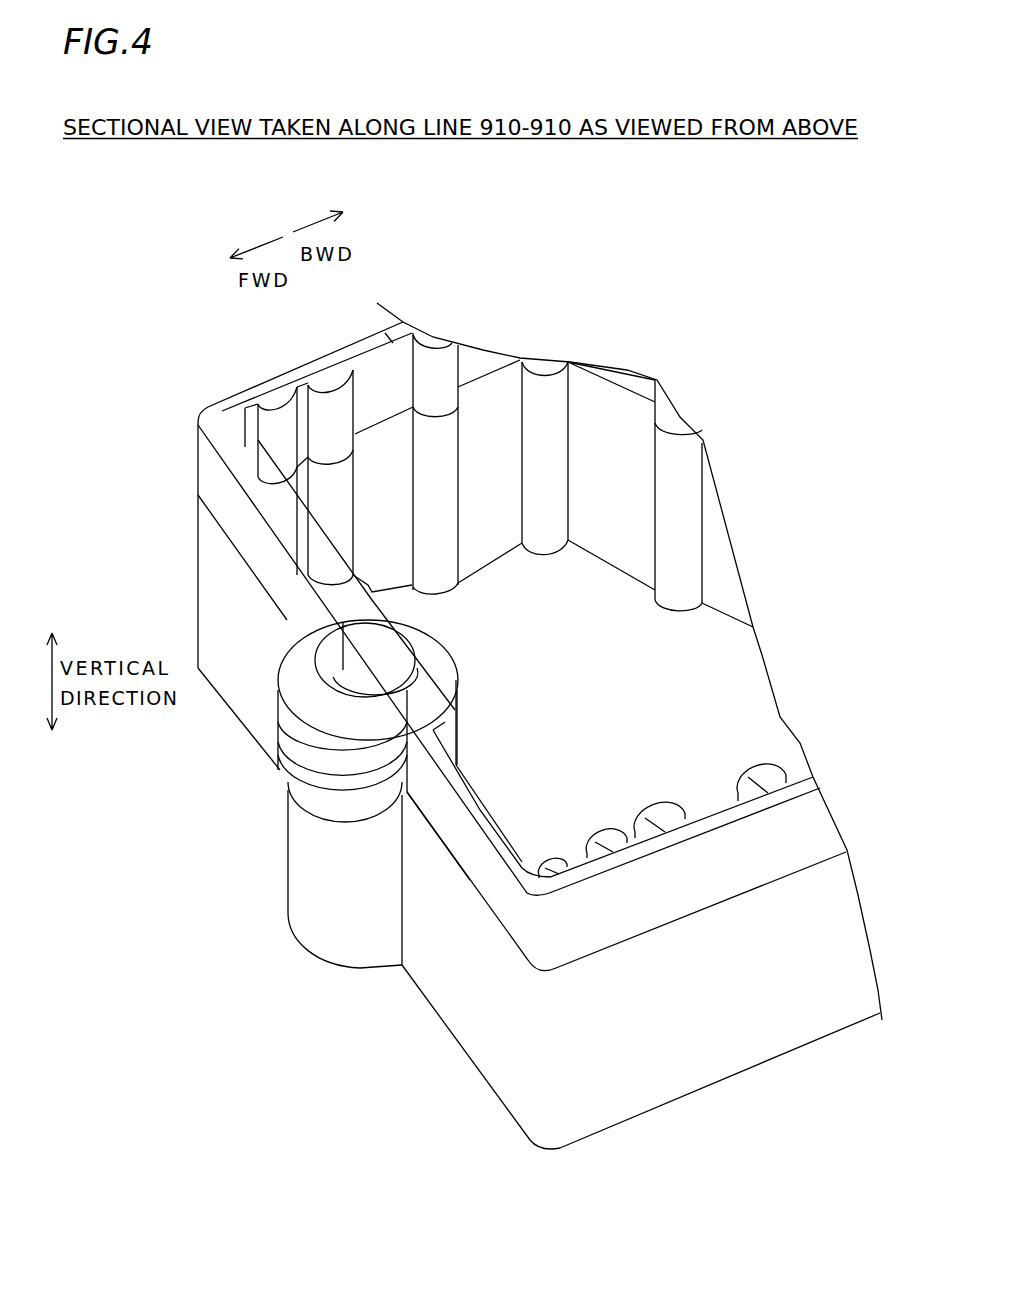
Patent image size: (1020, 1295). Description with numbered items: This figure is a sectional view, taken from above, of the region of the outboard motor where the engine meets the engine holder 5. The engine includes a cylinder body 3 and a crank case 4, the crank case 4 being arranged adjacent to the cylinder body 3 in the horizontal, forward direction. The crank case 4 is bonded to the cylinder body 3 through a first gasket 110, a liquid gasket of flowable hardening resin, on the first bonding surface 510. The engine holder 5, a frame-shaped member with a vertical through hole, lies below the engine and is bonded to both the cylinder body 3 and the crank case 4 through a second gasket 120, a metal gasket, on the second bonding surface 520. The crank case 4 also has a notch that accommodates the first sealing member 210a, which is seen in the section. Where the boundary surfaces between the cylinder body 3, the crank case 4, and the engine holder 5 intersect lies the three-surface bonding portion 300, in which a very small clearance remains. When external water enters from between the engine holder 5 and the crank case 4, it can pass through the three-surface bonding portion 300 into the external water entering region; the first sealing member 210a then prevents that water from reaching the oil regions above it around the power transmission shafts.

The cylinder body 3 is at (208, 480).
The crank case 4 is at (300, 712).
The engine holder 5 is at (320, 907).
The first gasket 110 is at (325, 699).
The first bonding surface 510 is at (350, 660).
The first sealing member 210a is at (402, 668).
The three-surface bonding portion 300 is at (410, 790).
The second gasket 120 is at (356, 950).
The second bonding surface 520 is at (507, 923).